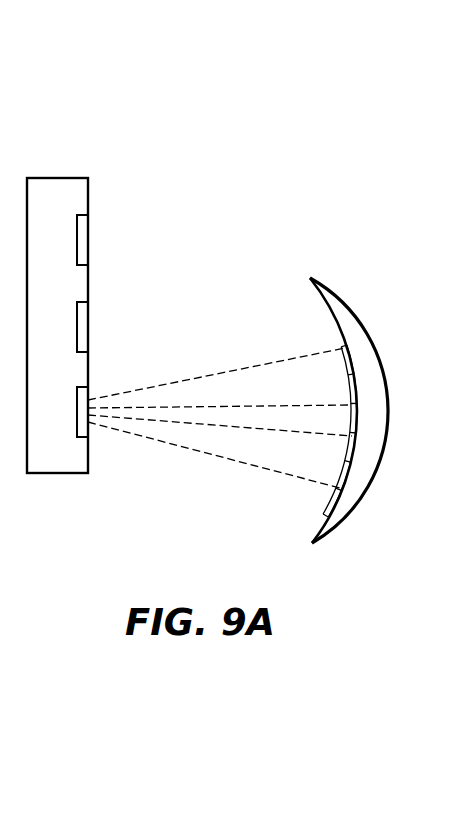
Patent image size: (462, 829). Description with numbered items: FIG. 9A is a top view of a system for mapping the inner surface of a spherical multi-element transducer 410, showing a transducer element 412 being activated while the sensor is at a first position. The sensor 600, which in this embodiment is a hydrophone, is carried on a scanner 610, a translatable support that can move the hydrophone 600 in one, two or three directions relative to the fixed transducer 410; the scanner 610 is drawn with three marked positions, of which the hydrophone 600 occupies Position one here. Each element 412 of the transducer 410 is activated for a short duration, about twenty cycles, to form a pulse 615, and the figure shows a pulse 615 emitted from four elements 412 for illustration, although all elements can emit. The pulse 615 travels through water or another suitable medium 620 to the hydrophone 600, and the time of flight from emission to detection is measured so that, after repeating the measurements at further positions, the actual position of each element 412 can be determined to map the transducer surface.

The scanner 610 is at (55, 178).
The sensor 600 is at (82, 437).
The medium 620 is at (177, 304).
The pulse 615 is at (227, 375).
The multi-element transducer 410 is at (360, 500).
The transducer element 412 is at (347, 348).